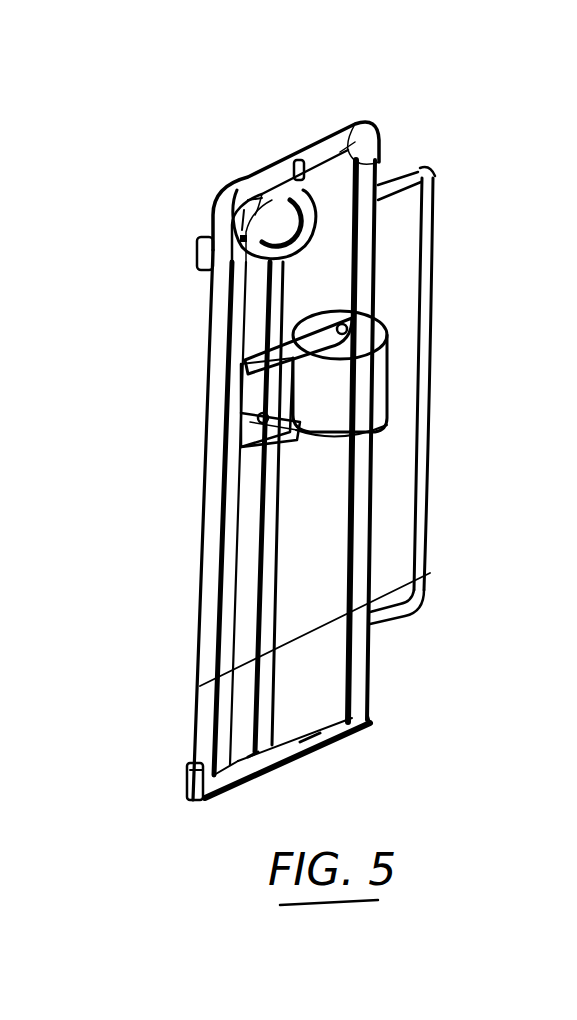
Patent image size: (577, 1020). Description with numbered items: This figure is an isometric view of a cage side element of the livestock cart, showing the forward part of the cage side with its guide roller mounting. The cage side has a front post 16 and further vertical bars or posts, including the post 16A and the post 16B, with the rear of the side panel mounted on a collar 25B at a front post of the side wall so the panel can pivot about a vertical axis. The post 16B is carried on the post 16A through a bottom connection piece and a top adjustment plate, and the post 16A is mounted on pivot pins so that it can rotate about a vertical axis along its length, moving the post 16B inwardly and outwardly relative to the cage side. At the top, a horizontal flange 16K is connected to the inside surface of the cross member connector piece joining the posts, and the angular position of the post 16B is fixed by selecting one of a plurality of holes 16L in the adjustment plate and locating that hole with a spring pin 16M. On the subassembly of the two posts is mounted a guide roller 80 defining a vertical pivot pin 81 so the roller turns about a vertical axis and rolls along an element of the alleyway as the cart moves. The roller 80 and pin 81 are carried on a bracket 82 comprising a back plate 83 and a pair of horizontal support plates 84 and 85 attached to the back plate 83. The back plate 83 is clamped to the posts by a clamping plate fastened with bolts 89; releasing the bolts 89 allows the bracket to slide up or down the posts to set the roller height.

The front post 16 is at (206, 556).
The post 16A is at (236, 602).
The post 16B is at (272, 537).
The horizontal flange 16K is at (268, 215).
The holes 16L is at (280, 238).
The spring pin 16M is at (313, 170).
The collar 25B is at (193, 802).
The guide roller 80 is at (387, 380).
The vertical pivot pin 81 is at (330, 316).
The bracket 82 is at (300, 430).
The back plate 83 is at (240, 405).
The horizontal support plate 84 is at (352, 330).
The horizontal support plate 85 is at (300, 414).
The bolts 89 is at (243, 420).